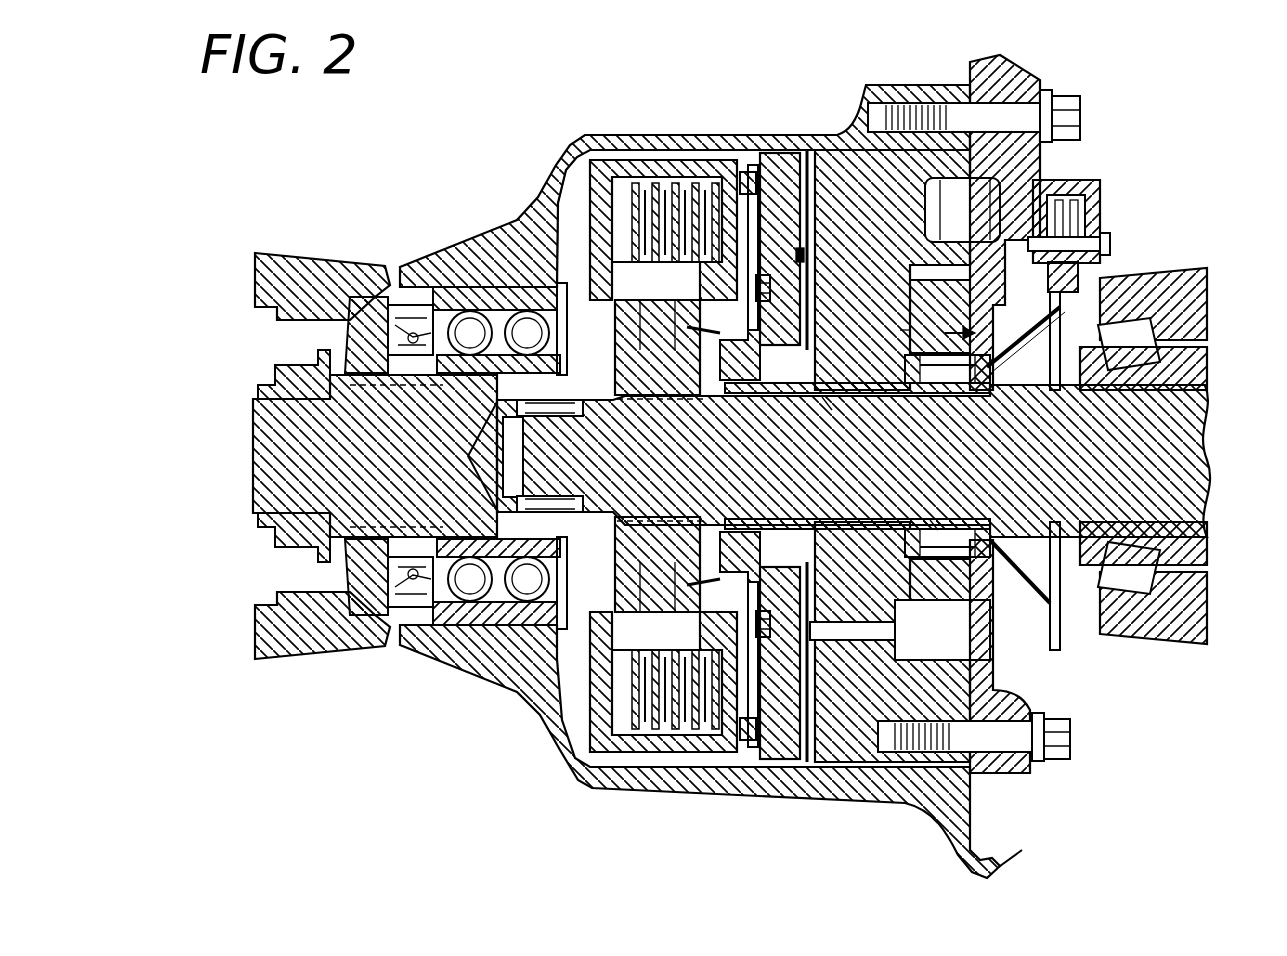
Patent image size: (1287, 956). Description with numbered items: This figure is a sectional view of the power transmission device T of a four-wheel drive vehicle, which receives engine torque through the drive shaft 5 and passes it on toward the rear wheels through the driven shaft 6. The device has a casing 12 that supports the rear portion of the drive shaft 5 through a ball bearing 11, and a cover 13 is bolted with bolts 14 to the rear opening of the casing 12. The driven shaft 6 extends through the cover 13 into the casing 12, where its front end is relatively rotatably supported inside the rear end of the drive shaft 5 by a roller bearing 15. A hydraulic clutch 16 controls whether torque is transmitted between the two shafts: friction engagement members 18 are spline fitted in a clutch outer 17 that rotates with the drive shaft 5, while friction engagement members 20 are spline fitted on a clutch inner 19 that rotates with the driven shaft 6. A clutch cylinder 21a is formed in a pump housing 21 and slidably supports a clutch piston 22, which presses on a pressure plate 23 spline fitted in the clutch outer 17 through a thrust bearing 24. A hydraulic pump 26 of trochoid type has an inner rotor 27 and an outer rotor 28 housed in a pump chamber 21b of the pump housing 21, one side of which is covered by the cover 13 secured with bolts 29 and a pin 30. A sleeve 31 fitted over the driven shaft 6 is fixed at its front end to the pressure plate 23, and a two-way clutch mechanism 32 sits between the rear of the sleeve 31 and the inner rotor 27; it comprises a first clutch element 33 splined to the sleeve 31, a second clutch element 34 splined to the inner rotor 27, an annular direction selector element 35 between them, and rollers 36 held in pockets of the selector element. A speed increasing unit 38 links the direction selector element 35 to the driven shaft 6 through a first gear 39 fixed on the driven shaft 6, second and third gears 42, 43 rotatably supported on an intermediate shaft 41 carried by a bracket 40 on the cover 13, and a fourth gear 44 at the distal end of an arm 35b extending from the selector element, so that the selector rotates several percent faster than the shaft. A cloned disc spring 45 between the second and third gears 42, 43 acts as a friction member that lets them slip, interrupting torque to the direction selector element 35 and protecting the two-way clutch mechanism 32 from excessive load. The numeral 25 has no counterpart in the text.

The power transmission device T is at (530, 130).
The drive shaft 5 is at (394, 468).
The driven shaft 6 is at (1081, 473).
The ball bearing 11 is at (497, 283).
The casing 12 is at (830, 135).
The cover 13 is at (1008, 75).
The bolt 14 is at (1065, 118).
The roller bearing 15 is at (550, 490).
The hydraulic clutch 16 is at (583, 228).
The clutch outer 17 is at (600, 195).
The friction engagement members 18 is at (680, 185).
The clutch inner 19 is at (662, 545).
The friction engagement members 20 is at (670, 282).
The pump housing 21 is at (800, 230).
The clutch cylinder 21a is at (750, 170).
The pump chamber 21b is at (905, 582).
The clutch piston 22 is at (808, 196).
The pressure plate 23 is at (756, 456).
The thrust bearing 24 is at (772, 294).
The seal 25 is at (804, 255).
The hydraulic pump 26 is at (998, 641).
The inner rotor 27 is at (918, 338).
The outer rotor 28 is at (898, 240).
The bolt 29 is at (1050, 742).
The pin 30 is at (975, 190).
The sleeve 31 is at (825, 397).
The two-way clutch mechanism 32 is at (932, 522).
The first clutch element 33 is at (893, 382).
The second clutch element 34 is at (918, 366).
The direction selector element 35 is at (1000, 375).
The arm 35b is at (1010, 340).
The rollers 36 is at (940, 385).
The speed increasing unit 38 is at (1110, 218).
The first gear 39 is at (1068, 652).
The bracket 40 is at (1092, 225).
The intermediate shaft 41 is at (1020, 305).
The second gear 42 is at (1100, 195).
The third gear 43 is at (1045, 188).
The fourth gear 44 is at (1050, 640).
The cloned disc spring 45 is at (1115, 286).